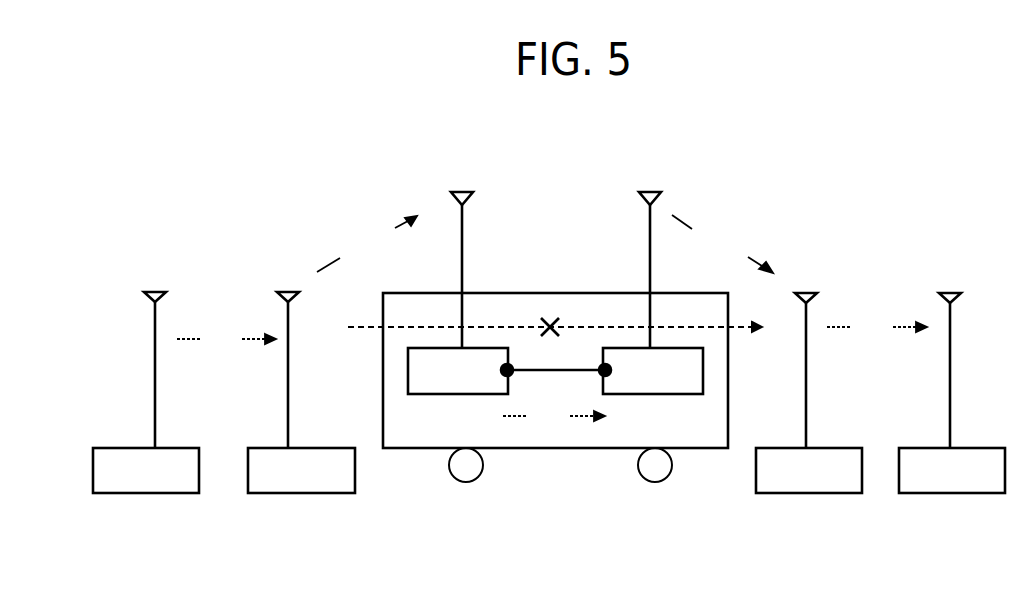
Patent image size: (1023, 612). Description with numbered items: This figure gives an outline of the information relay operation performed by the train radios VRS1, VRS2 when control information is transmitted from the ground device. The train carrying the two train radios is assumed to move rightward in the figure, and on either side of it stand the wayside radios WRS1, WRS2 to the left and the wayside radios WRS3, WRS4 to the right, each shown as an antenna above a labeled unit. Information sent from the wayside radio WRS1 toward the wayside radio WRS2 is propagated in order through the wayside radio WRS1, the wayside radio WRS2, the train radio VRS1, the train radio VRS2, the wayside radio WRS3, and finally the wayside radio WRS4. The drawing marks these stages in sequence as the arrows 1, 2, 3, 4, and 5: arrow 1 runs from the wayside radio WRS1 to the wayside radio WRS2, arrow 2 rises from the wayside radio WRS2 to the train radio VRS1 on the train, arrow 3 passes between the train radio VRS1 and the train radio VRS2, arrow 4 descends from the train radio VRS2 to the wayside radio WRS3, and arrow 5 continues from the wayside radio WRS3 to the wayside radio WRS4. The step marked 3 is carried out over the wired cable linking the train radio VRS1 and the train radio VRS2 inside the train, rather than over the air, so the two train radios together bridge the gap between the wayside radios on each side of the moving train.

The first relay step 1 is at (226, 339).
The second relay step 2 is at (367, 244).
The third relay step 3 is at (554, 416).
The fourth relay step 4 is at (722, 244).
The fifth relay step 5 is at (877, 327).
The wayside radio WRS1 is at (146, 392).
The wayside radio WRS2 is at (301, 392).
The wayside radio WRS3 is at (809, 393).
The wayside radio WRS4 is at (952, 393).
The train radio VRS1 is at (458, 293).
The train radio VRS2 is at (653, 293).